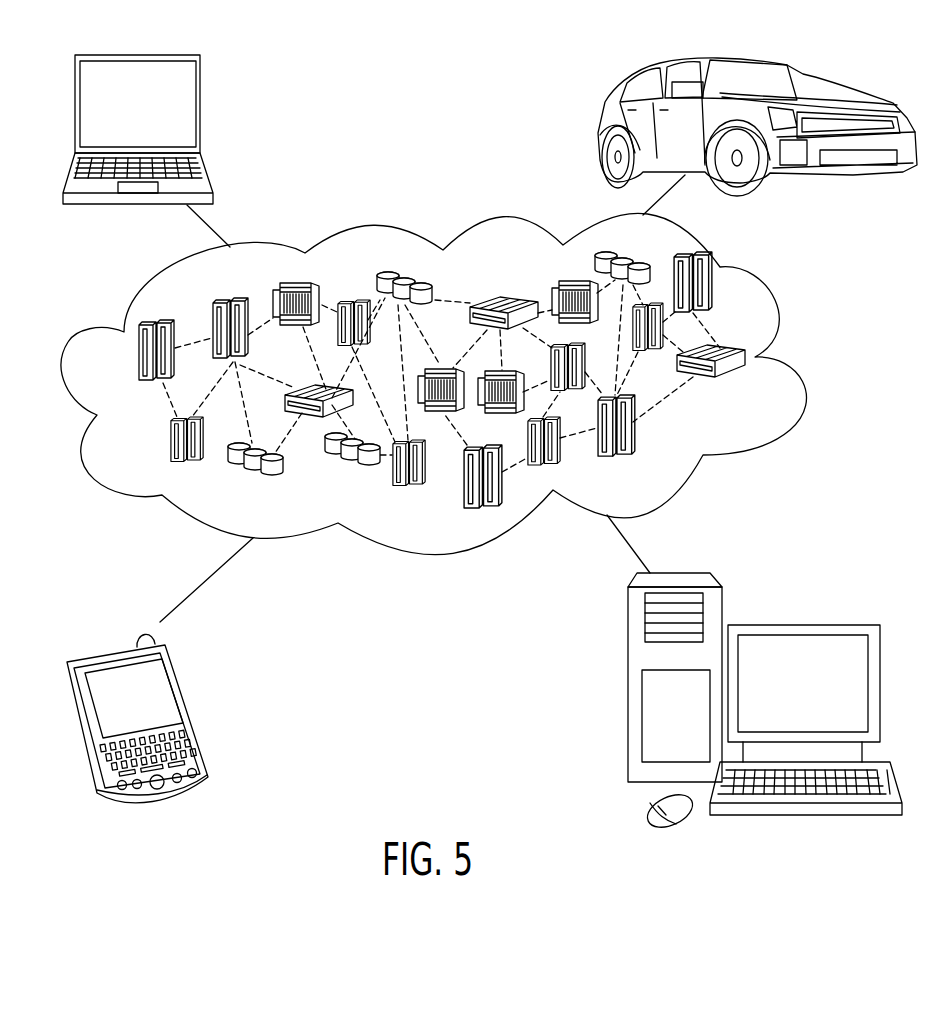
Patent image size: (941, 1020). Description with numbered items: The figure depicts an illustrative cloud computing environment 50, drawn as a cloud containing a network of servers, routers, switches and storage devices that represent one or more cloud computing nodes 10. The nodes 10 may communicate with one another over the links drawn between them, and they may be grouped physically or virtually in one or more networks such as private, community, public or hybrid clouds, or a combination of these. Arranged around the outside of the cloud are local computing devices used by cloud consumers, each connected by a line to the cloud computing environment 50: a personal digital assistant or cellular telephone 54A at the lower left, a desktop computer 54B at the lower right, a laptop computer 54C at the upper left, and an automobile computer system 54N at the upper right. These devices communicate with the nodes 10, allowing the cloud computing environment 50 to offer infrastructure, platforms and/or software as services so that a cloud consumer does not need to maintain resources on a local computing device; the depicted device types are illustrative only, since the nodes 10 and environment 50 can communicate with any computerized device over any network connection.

The cloud computing node 10 is at (750, 388).
The cloud computing environment 50 is at (800, 360).
The personal digital assistant or cellular telephone 54A is at (190, 710).
The desktop computer 54B is at (802, 625).
The laptop computer 54C is at (200, 111).
The automobile computer system 54N is at (600, 124).